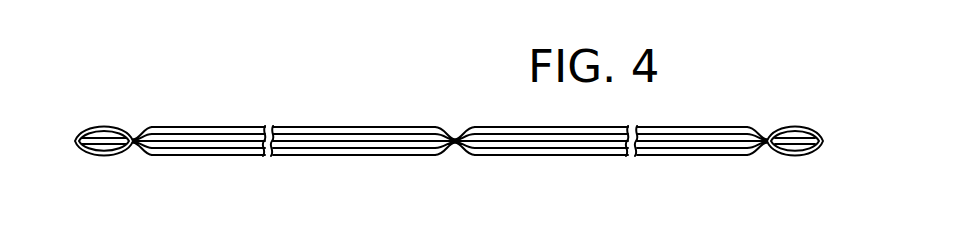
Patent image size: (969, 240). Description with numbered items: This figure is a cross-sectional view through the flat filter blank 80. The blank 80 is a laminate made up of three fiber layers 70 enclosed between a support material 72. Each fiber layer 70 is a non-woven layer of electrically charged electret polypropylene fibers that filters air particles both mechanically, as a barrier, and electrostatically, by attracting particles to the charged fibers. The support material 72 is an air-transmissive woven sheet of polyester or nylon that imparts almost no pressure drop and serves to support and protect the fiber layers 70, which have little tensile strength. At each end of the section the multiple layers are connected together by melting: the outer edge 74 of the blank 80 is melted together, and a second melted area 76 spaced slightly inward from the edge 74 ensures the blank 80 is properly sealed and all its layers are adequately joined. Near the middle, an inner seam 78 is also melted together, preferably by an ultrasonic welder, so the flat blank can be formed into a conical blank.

The fiber layer 70 is at (552, 149).
The support material 72 is at (359, 127).
The outer edge 74 is at (74, 139).
The second melted area 76 is at (134, 140).
The inner seam 78 is at (456, 132).
The filter blank 80 is at (292, 122).